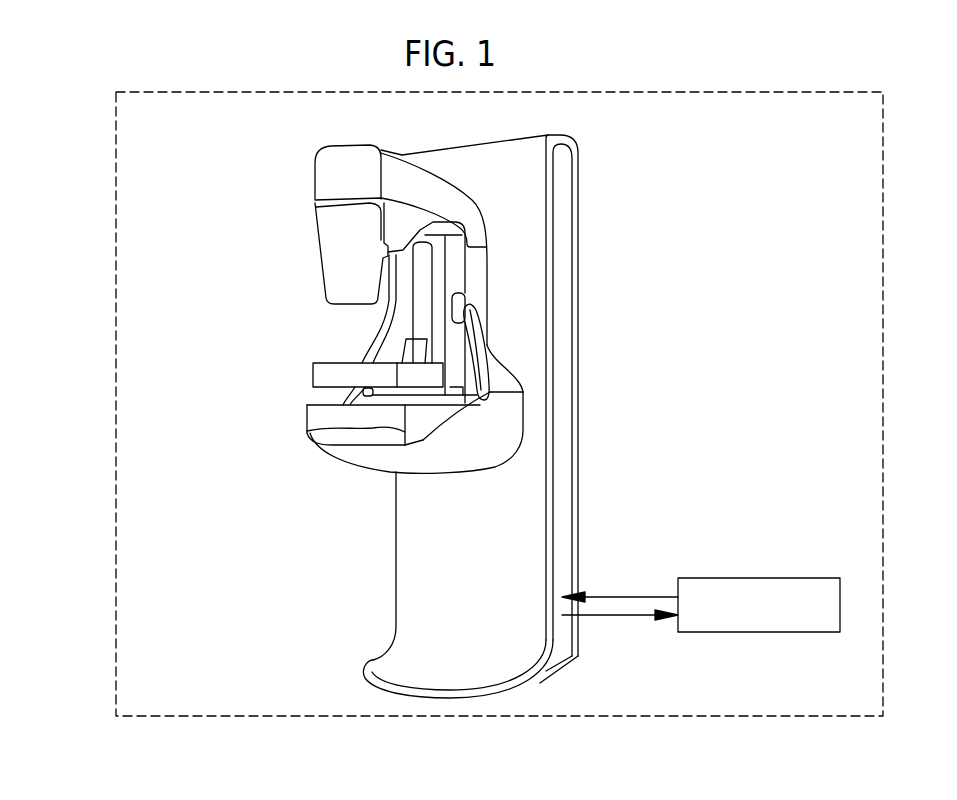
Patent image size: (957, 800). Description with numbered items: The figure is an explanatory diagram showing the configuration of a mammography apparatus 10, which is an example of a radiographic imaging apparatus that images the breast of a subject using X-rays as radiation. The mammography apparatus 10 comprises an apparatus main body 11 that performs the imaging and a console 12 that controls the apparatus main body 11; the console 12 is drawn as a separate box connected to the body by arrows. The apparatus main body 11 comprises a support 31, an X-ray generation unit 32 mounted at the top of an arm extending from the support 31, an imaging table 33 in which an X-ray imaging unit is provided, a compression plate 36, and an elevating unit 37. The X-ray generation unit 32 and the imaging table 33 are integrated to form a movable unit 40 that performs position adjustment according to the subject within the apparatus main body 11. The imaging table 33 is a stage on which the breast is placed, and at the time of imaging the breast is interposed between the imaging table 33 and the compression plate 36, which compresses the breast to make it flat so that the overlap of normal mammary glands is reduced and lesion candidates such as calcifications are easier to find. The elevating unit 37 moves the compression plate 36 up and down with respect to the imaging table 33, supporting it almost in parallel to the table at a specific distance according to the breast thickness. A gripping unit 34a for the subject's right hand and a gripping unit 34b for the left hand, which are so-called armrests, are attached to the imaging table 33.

The mammography apparatus 10 is at (116, 132).
The apparatus main body 11 is at (208, 182).
The console 12 is at (802, 578).
The support 31 is at (566, 218).
The X-ray generation unit 32 is at (323, 177).
The imaging table 33 is at (315, 418).
The gripping unit 34a is at (477, 350).
The gripping unit 34b is at (373, 342).
The compression plate 36 is at (315, 377).
The elevating unit 37 is at (457, 280).
The movable unit 40 is at (503, 417).